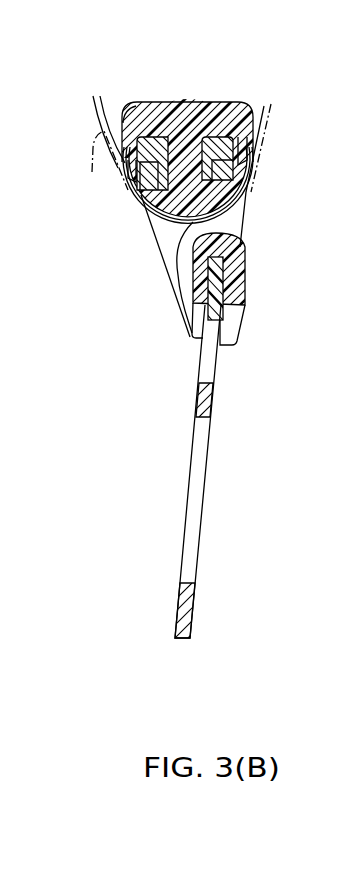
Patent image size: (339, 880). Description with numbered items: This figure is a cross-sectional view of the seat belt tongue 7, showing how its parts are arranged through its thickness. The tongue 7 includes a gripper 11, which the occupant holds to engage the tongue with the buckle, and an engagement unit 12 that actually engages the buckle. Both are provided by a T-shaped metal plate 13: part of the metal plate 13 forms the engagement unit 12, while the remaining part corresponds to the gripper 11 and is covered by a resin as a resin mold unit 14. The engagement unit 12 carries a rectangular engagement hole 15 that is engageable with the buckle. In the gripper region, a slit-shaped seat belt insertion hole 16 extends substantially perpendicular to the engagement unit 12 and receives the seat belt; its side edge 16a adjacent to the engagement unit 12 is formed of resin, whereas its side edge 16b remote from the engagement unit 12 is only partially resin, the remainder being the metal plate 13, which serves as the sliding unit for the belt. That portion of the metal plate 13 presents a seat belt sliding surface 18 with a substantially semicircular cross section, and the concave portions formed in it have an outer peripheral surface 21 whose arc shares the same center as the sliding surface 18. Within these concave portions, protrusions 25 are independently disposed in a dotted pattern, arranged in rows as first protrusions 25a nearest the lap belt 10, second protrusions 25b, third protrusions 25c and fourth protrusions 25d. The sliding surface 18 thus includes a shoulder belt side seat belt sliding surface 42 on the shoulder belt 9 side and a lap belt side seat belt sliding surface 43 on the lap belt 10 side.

The tongue 7 is at (148, 455).
The shoulder belt 9 is at (264, 143).
The lap belt 10 is at (90, 172).
The gripper 11 is at (259, 112).
The engagement unit 12 is at (185, 527).
The metal plate 13 is at (140, 198).
The resin mold unit 14 is at (207, 102).
The engagement hole 15 is at (187, 583).
The seat belt insertion hole 16 is at (176, 298).
The side edge 16a is at (236, 241).
The side edge 16b is at (234, 227).
The seat belt sliding surface 18 is at (160, 225).
The outer peripheral surface 21 is at (190, 210).
The protrusions 25 is at (95, 238).
The first protrusions 25a is at (153, 205).
The second protrusions 25b is at (160, 225).
The third protrusions 25c is at (242, 208).
The fourth protrusions 25d is at (244, 197).
The shoulder belt side seat belt sliding surface 42 is at (250, 168).
The lap belt side seat belt sliding surface 43 is at (132, 157).